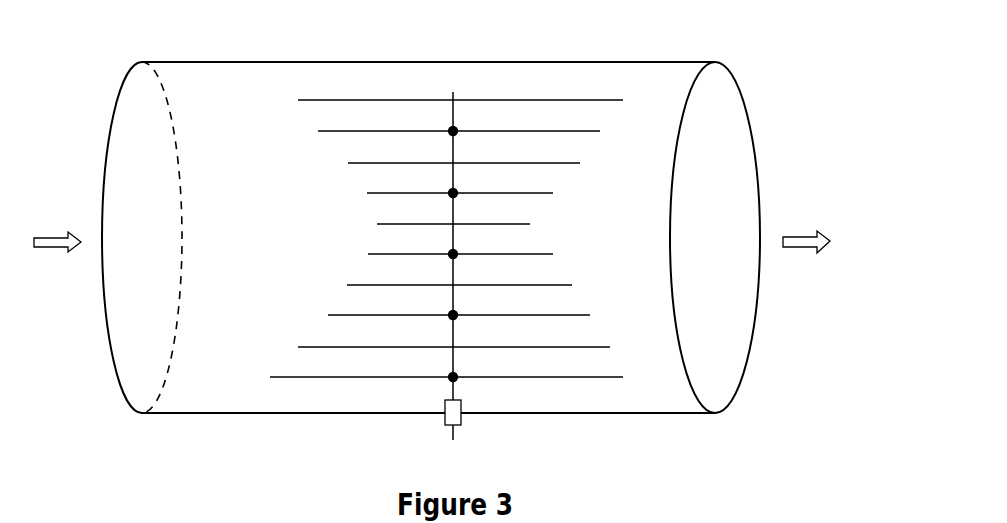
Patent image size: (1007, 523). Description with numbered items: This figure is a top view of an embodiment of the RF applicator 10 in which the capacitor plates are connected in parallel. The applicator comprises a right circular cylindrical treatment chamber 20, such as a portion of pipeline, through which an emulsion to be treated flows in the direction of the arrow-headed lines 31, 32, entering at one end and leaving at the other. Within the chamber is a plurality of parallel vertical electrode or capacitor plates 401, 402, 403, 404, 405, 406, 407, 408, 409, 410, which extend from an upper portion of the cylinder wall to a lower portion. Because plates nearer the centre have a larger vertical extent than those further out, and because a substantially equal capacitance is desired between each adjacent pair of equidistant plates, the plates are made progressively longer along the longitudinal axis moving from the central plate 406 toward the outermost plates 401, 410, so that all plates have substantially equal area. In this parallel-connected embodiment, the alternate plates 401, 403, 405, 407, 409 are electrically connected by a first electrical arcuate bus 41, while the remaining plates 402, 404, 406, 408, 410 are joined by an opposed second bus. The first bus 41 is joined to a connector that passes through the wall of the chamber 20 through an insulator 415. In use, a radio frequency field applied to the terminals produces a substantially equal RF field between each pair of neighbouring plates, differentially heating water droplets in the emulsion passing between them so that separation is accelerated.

The RF applicator 10 is at (451, 214).
The treatment chamber 20 is at (627, 62).
The arrow-headed line 31 is at (48, 247).
The arrow-headed line 32 is at (797, 247).
The first electrical arcuate bus 41 is at (455, 110).
The capacitor plate 401 is at (623, 377).
The capacitor plate 402 is at (610, 347).
The capacitor plate 403 is at (590, 315).
The capacitor plate 404 is at (572, 285).
The capacitor plate 405 is at (553, 254).
The central plate 406 is at (530, 224).
The capacitor plate 407 is at (553, 193).
The capacitor plate 408 is at (580, 163).
The capacitor plate 409 is at (600, 131).
The capacitor plate 410 is at (623, 100).
The insulator 415 is at (445, 421).